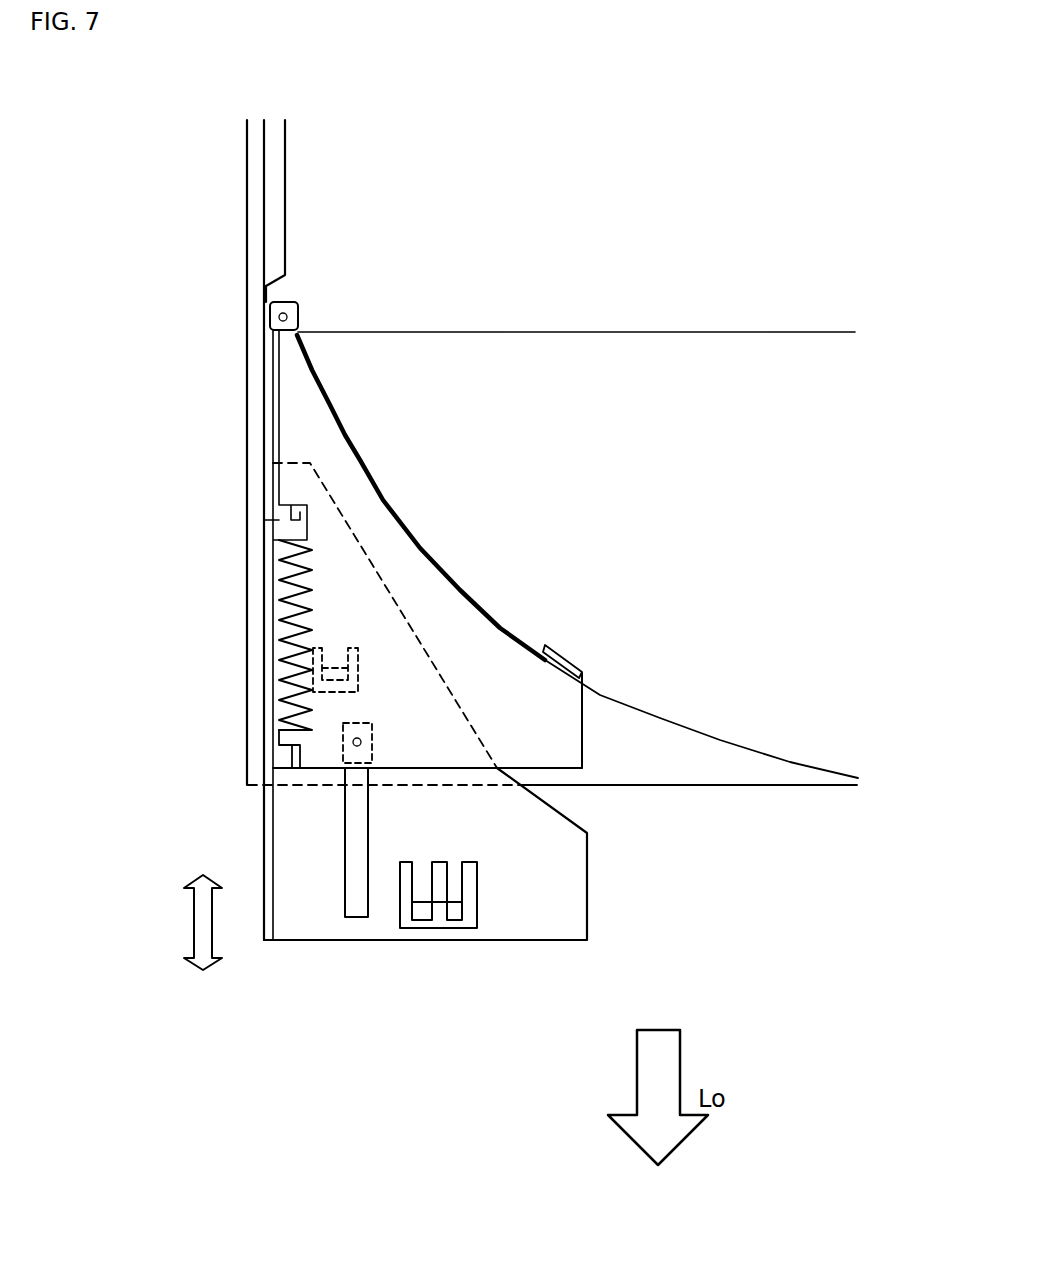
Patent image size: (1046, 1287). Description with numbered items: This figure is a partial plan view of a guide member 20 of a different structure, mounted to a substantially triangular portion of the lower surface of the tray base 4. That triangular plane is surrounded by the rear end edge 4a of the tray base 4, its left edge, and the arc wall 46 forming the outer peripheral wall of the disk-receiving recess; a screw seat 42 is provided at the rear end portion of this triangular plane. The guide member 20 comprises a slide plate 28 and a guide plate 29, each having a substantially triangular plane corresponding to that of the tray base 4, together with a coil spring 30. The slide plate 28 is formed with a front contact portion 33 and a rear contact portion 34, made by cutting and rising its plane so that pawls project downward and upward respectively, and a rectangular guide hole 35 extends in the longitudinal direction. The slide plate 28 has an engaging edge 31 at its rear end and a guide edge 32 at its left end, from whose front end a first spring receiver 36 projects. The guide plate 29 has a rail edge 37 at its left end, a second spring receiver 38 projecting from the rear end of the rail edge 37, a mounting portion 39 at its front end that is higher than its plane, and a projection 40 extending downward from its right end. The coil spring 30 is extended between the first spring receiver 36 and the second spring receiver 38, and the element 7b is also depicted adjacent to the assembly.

The guide wall 7b is at (317, 237).
The mounting portion 39 is at (267, 326).
The rail edge 37 is at (267, 402).
The first spring receiver 36 is at (272, 520).
The coil spring 30 is at (272, 645).
The second spring receiver 38 is at (265, 770).
The front contact portion 33 is at (358, 665).
The screw seat 42 is at (372, 750).
The tray base 4 is at (708, 772).
The rear end edge 4a is at (795, 792).
The arc wall 46 is at (660, 718).
The projection 40 is at (562, 650).
The guide plate 29 is at (565, 753).
The slide plate 28 is at (575, 924).
The guide hole 35 is at (362, 906).
The rear contact portion 34 is at (455, 916).
The engaging edge 31 is at (322, 942).
The guide edge 32 is at (262, 843).
The guide member 20 is at (283, 1006).